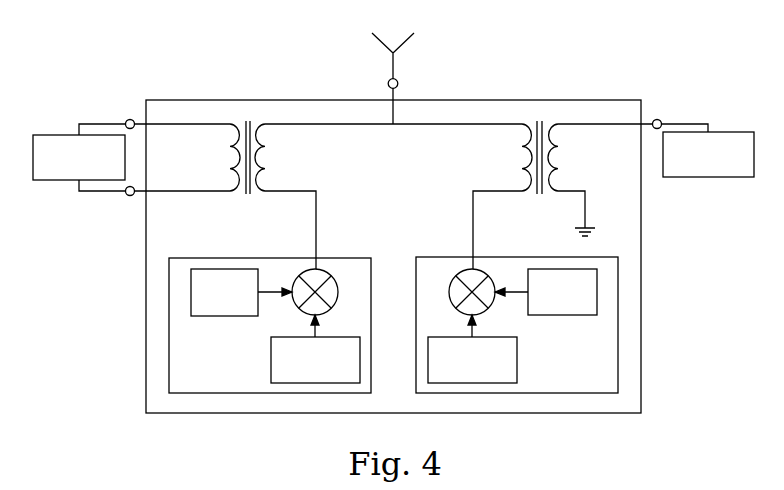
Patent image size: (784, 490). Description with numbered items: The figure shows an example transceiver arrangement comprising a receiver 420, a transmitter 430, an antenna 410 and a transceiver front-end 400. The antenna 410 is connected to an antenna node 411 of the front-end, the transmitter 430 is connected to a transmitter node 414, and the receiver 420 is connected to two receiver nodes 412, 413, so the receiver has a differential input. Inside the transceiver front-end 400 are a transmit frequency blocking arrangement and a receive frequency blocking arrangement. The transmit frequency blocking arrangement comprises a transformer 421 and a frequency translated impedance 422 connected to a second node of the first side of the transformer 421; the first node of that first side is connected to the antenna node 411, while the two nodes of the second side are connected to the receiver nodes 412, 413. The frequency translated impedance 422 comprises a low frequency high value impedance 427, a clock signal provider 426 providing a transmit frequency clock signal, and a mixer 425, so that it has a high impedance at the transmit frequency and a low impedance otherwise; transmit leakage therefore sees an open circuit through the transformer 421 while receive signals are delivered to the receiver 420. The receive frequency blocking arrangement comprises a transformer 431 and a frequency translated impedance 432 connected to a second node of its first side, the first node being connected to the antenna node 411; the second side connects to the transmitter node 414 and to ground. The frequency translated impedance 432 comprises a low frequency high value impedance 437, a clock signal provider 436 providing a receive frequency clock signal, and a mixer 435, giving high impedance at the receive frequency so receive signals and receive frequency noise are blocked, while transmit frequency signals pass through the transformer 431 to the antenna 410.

The transceiver front-end 400 is at (575, 101).
The antenna 410 is at (380, 45).
The antenna node 411 is at (398, 85).
The receiver node 412 is at (125, 123).
The receiver node 413 is at (127, 194).
The transmitter node 414 is at (663, 121).
The receiver 420 is at (79, 157).
The transformer 421 is at (265, 158).
The frequency translated impedance 422 is at (332, 281).
The mixer 425 is at (300, 308).
The clock signal provider 426 is at (241, 292).
The low frequency high value impedance 427 is at (315, 349).
The transmitter 430 is at (708, 150).
The transformer 431 is at (523, 160).
The frequency translated impedance 432 is at (455, 281).
The mixer 435 is at (488, 308).
The clock signal provider 436 is at (546, 292).
The low frequency high value impedance 437 is at (472, 349).